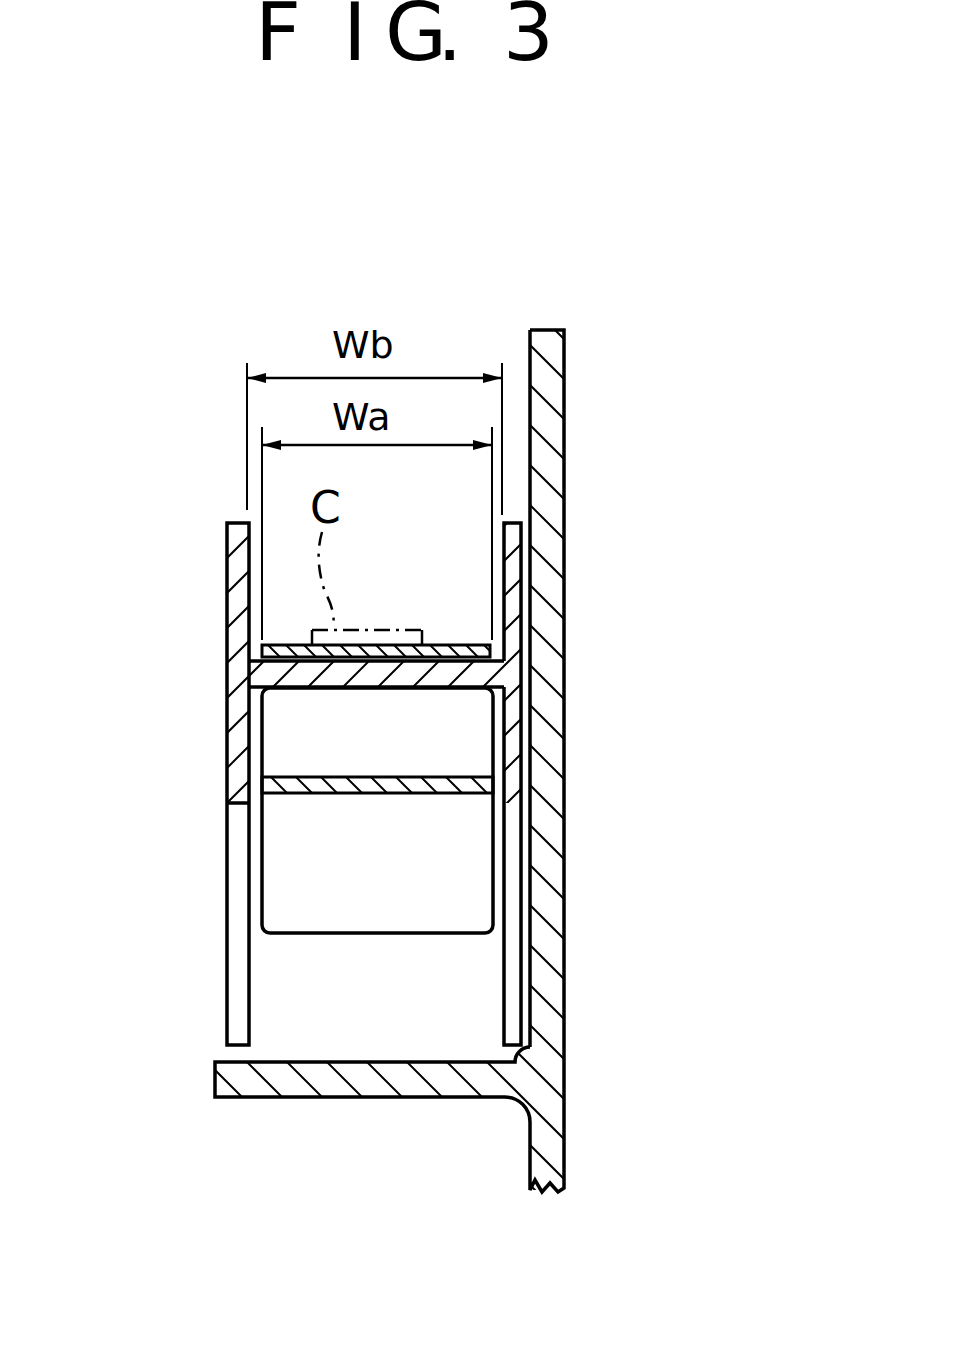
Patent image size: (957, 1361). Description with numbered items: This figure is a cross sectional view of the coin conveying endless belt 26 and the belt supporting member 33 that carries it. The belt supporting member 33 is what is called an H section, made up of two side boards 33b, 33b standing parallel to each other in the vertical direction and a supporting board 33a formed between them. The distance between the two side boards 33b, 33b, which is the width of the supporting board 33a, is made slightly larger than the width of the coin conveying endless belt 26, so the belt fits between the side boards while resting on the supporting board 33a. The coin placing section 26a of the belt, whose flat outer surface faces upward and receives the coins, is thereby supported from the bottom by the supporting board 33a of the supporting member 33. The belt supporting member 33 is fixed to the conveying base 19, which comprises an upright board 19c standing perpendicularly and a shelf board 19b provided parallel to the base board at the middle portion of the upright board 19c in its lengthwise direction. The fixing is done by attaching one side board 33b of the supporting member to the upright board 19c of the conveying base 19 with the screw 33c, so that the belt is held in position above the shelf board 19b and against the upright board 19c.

The base 19 is at (478, 845).
The shelf board 19b is at (350, 1097).
The upright board 19c is at (564, 955).
The coin conveying endless belt 26 is at (304, 804).
The coin placing section 26a is at (448, 645).
The belt supporting member 33 is at (393, 810).
The supporting board 33a is at (297, 690).
The side board 33b is at (226, 556).
The screw 33c is at (496, 590).